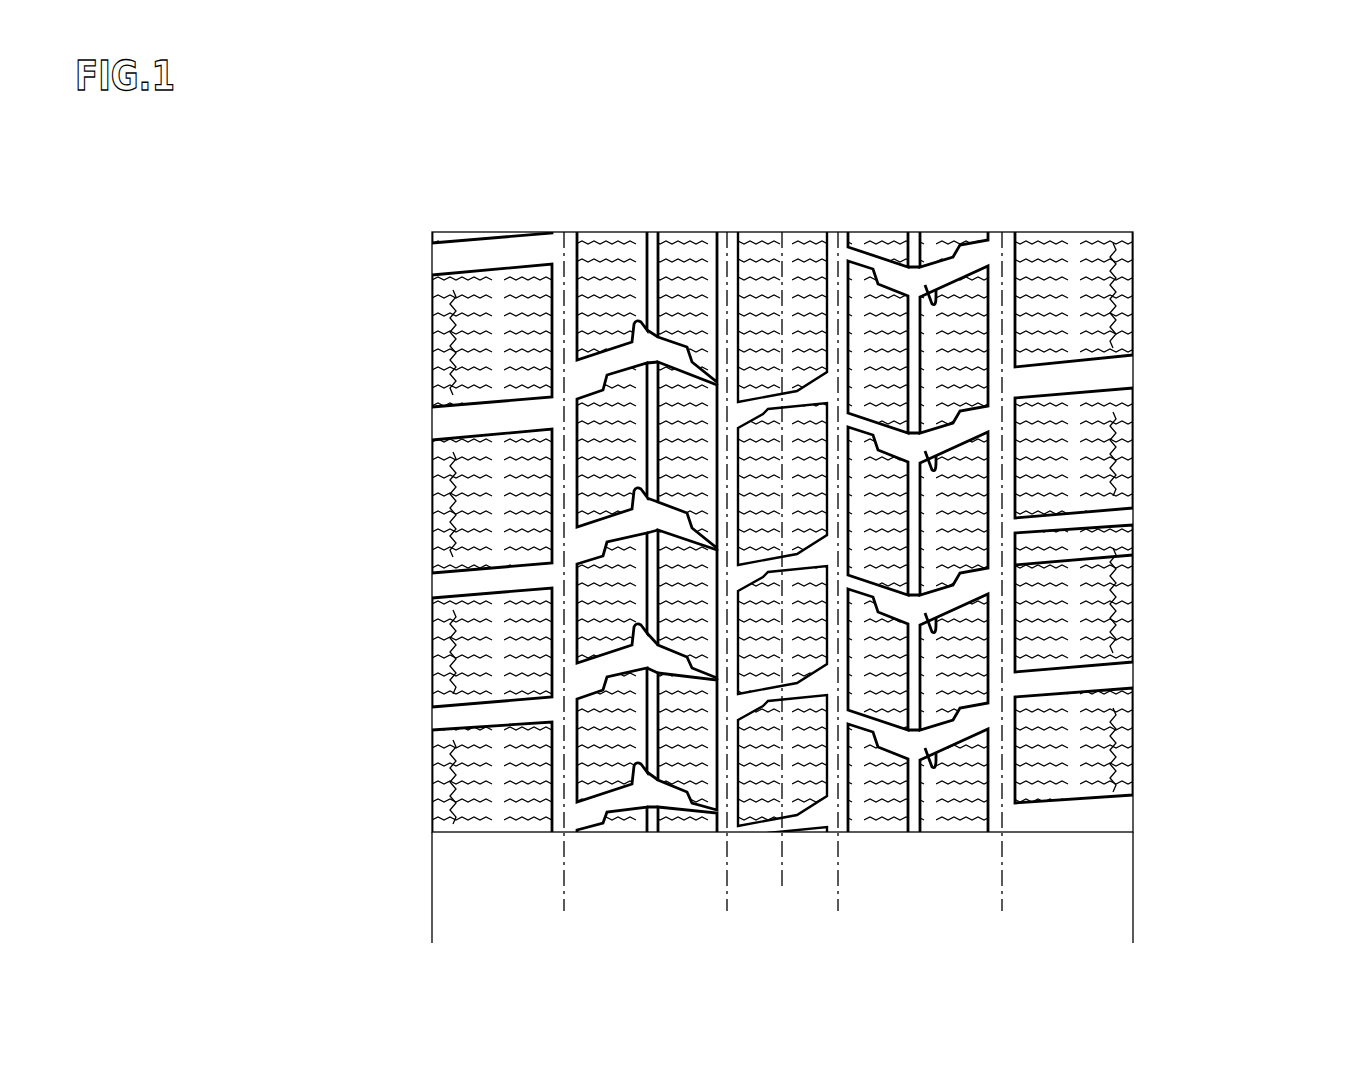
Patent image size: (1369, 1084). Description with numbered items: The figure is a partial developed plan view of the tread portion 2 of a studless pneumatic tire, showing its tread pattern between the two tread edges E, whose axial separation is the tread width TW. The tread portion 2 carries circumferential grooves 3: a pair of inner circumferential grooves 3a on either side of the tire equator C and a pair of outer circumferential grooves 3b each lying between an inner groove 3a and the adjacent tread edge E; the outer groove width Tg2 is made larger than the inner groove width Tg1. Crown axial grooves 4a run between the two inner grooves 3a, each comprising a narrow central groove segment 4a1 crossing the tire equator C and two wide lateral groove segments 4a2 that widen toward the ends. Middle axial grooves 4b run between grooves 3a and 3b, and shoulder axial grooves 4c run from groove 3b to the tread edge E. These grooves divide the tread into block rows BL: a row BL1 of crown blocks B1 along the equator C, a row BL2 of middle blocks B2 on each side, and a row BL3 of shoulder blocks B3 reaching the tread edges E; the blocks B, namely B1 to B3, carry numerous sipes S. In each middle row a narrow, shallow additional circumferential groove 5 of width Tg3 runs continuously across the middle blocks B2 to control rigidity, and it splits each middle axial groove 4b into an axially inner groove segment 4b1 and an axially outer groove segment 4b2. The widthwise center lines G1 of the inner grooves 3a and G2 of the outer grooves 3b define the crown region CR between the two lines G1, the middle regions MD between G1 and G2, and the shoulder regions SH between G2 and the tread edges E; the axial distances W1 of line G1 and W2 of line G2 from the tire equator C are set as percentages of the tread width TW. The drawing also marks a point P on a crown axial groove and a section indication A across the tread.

The tread portion 2 is at (1165, 220).
The block lands BL is at (1105, 142).
The row of crown blocks BL1 is at (766, 255).
The row of middle blocks BL2 is at (622, 245).
The row of shoulder blocks BL3 is at (498, 280).
The widthwise center line of inner circumferential groove G1 is at (782, 546).
The widthwise center line of outer circumferential groove G2 is at (782, 546).
The tire equator C is at (782, 535).
The tread edge E is at (432, 812).
The reference point P is at (800, 392).
The circumferential grooves 3 is at (1290, 428).
The inner circumferential groove 3a is at (735, 412).
The outer circumferential groove 3b is at (735, 468).
The crown axial groove 4a is at (330, 615).
The narrow central groove segment 4a1 is at (650, 666).
The wide lateral groove segment 4a2 is at (640, 638).
The middle axial groove 4b is at (330, 343).
The axially inner groove segment 4b1 is at (655, 391).
The axially outer groove segment 4b2 is at (655, 366).
The shoulder axial groove 4c is at (475, 722).
The narrow circumferential groove 5 is at (1015, 566).
The sipe S is at (605, 593).
The section line A- A is at (432, 583).
The lug grooves B is at (1290, 283).
The crown block B1 is at (812, 318).
The middle block B2 is at (957, 347).
The shoulder block B3 is at (1100, 400).
The groove width of inner circumferential groove Tg1 is at (848, 613).
The groove width of outer circumferential groove Tg2 is at (955, 633).
The groove width of narrow circumferential groove Tg3 is at (870, 698).
The axial distance of inner groove center line from tire equator W1 is at (745, 848).
The axial distance of outer groove center line from tire equator W2 is at (1002, 876).
The shoulder region SH is at (432, 906).
The middle region MD is at (727, 906).
The crown region CR is at (727, 906).
The tread width TW is at (432, 938).